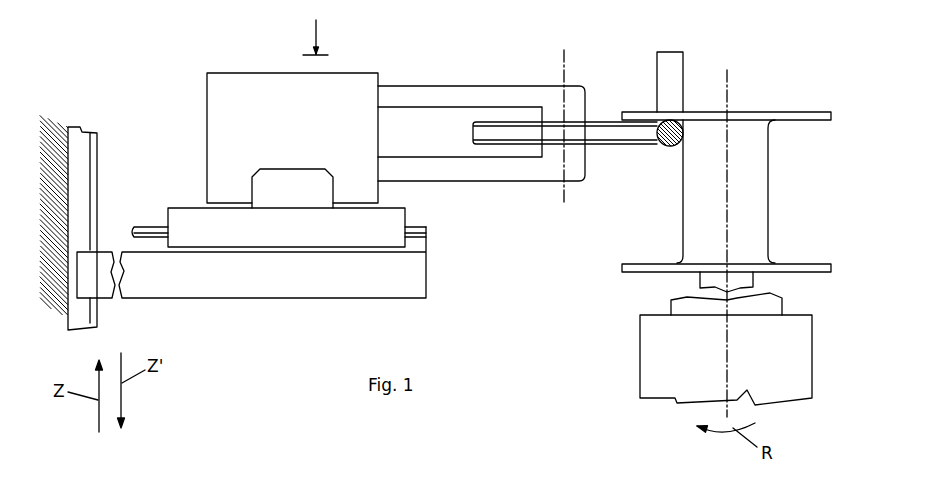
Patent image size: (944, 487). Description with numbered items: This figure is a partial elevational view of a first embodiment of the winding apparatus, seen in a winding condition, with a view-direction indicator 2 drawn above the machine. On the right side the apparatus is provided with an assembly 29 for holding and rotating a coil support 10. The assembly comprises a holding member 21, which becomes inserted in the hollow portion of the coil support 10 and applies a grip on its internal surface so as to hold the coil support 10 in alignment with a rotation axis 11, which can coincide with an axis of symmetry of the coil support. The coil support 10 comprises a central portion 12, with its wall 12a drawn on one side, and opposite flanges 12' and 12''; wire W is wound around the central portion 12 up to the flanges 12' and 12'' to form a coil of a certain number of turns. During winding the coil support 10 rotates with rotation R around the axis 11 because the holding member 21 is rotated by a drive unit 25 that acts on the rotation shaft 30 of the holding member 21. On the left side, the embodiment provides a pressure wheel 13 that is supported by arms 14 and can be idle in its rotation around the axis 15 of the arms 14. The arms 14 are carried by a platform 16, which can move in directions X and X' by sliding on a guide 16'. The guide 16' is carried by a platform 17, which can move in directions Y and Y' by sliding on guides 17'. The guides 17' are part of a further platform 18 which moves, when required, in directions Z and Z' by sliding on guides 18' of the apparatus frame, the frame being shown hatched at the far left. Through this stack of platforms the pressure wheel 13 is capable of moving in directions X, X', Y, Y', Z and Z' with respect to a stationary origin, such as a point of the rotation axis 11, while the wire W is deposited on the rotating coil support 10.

The section line indicator for FIG. 2 is at (316, 34).
The coil support 10 is at (787, 190).
The rotation axis 11 is at (727, 83).
The central portion 12 is at (744, 157).
The drum wall 12a is at (680, 210).
The flange 12' is at (729, 91).
The flange 12'' is at (735, 295).
The pressure wheel 13 is at (482, 134).
The arms 14 is at (463, 175).
The axis 15 is at (564, 60).
The platform 16 is at (292, 113).
The guide 16' is at (292, 162).
The platform 17 is at (283, 202).
The guides 17' is at (272, 207).
The platform 18 is at (251, 281).
The guides 18' is at (87, 200).
The holding member 21 is at (700, 280).
The drive unit 25 is at (652, 378).
The assembly 29 is at (588, 312).
The rotation shaft 30 is at (675, 303).
The wire W is at (666, 148).